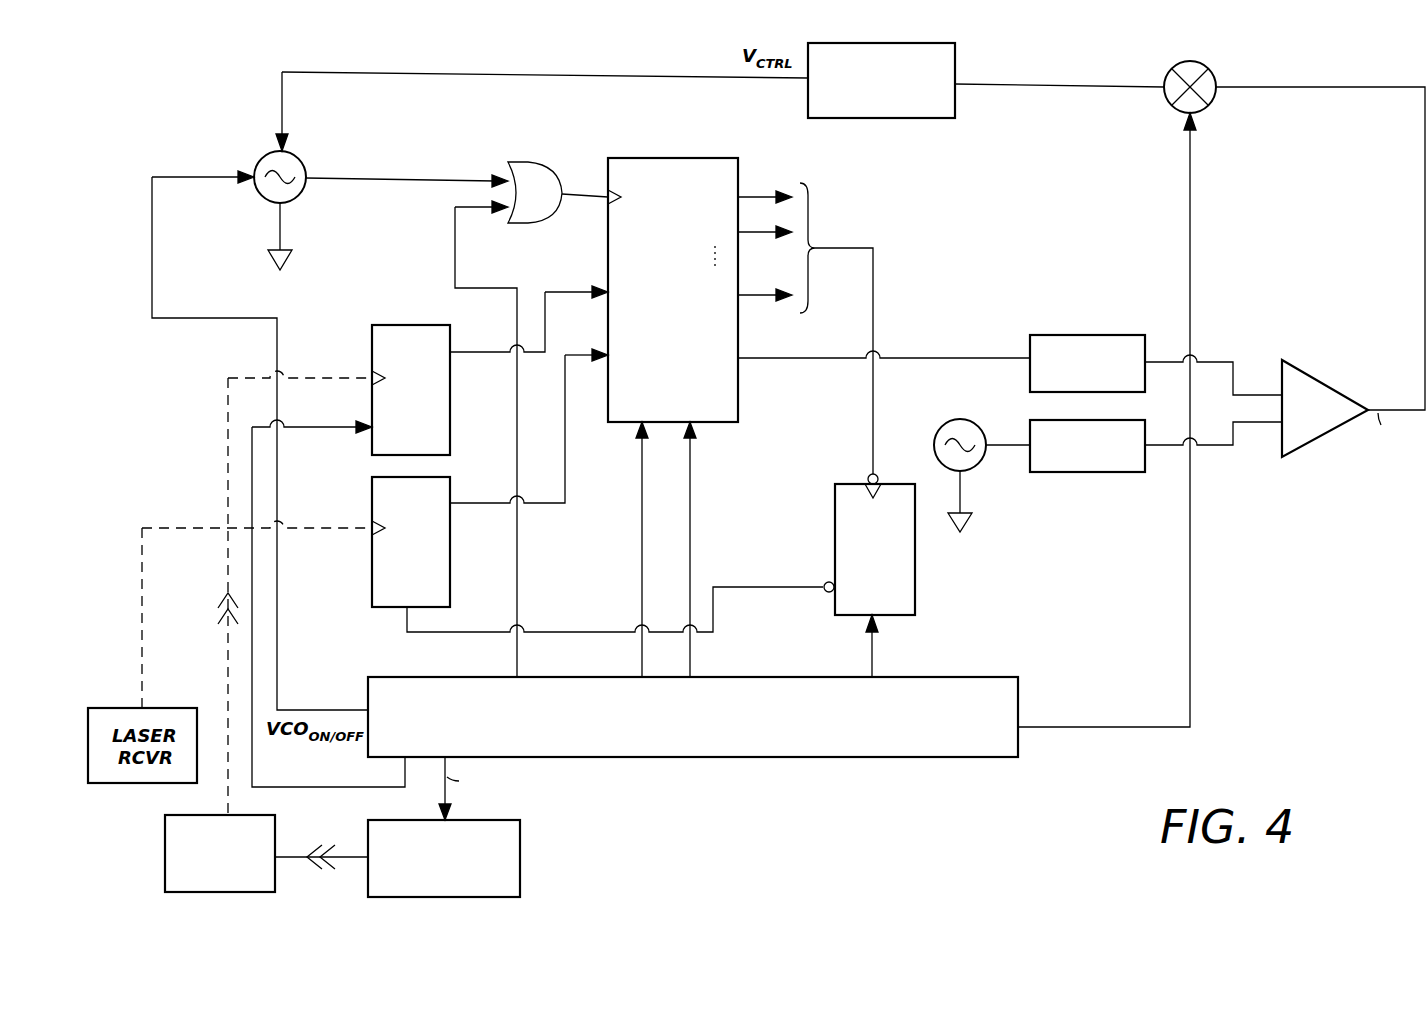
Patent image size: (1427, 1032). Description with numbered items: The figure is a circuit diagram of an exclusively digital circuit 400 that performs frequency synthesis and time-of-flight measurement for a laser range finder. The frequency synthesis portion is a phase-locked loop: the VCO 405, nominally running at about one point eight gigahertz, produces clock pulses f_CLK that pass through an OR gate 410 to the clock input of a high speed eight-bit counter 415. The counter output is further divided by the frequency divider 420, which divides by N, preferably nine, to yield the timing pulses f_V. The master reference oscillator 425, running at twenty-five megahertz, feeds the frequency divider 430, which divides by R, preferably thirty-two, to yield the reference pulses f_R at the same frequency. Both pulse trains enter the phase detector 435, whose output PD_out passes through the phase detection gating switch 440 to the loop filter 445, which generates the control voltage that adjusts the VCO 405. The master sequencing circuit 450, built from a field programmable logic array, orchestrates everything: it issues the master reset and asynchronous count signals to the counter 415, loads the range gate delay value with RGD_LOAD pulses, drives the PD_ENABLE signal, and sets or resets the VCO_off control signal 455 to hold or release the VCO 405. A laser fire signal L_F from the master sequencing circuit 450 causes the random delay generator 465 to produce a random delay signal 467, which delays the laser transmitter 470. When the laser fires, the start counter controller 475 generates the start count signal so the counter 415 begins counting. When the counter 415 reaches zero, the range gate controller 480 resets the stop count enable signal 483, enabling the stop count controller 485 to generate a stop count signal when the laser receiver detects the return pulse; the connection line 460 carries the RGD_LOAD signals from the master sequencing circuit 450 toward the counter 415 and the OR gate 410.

The digital circuit 400 is at (1262, 627).
The VCO 405 is at (263, 160).
The OR gate 410 is at (528, 225).
The counter 415 is at (674, 158).
The frequency divider 420 is at (1089, 335).
The master reference oscillator 425 is at (960, 418).
The frequency divider 430 is at (1085, 474).
The phase detector 435 is at (1324, 381).
The phase detection gating switch 440 is at (1214, 101).
The loop filter 445 is at (884, 120).
The master sequencing circuit 450 is at (754, 758).
The VCO_off control signal 455 is at (156, 252).
The range gate delay load line 460 is at (518, 570).
The random delay generator 465 is at (528, 857).
The random delay signal 467 is at (316, 850).
The laser transmitter 470 is at (165, 854).
The start counter controller 475 is at (413, 324).
The range gate controller 480 is at (915, 573).
The stop count enable signal 483 is at (770, 582).
The stop count controller 485 is at (380, 608).